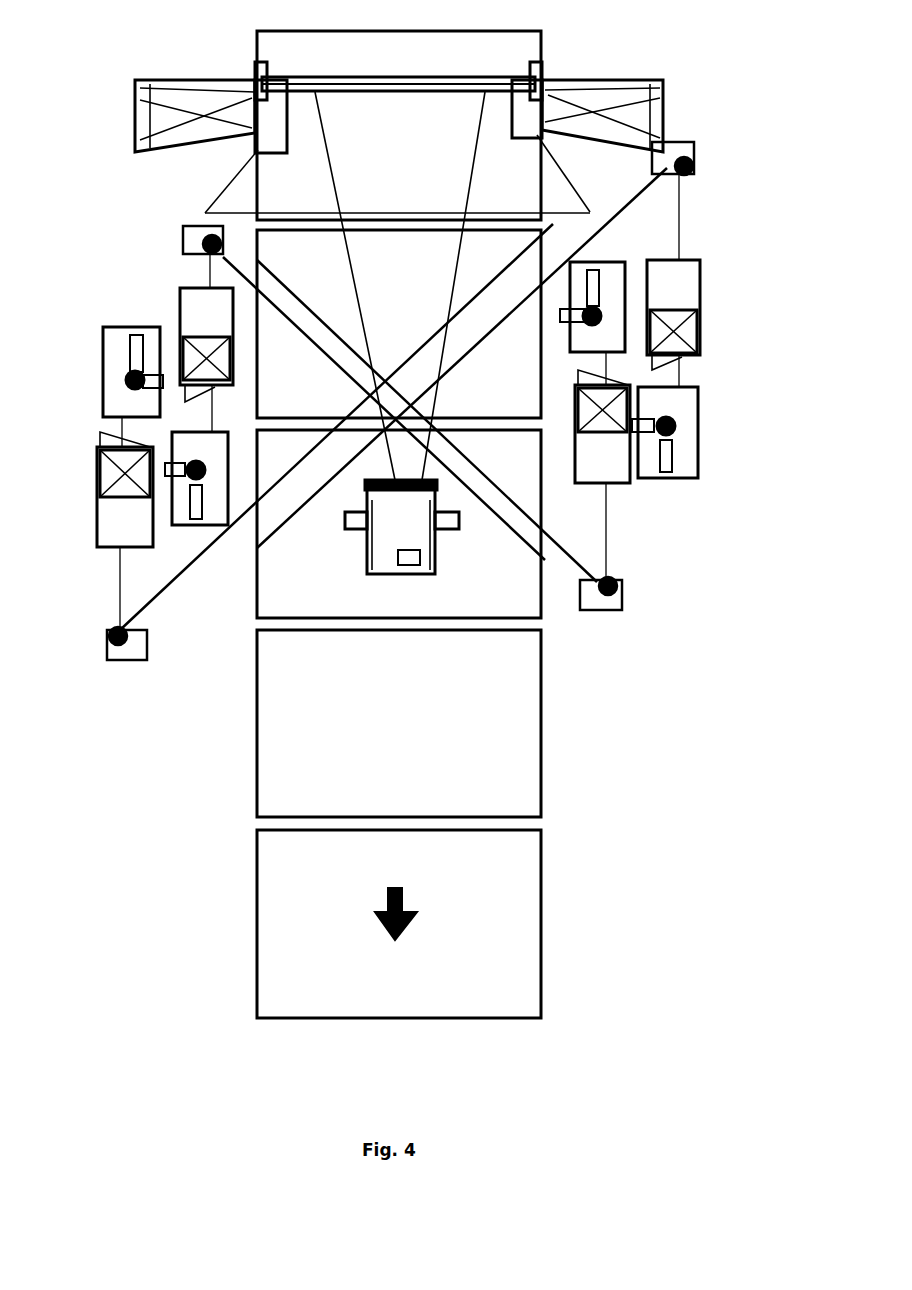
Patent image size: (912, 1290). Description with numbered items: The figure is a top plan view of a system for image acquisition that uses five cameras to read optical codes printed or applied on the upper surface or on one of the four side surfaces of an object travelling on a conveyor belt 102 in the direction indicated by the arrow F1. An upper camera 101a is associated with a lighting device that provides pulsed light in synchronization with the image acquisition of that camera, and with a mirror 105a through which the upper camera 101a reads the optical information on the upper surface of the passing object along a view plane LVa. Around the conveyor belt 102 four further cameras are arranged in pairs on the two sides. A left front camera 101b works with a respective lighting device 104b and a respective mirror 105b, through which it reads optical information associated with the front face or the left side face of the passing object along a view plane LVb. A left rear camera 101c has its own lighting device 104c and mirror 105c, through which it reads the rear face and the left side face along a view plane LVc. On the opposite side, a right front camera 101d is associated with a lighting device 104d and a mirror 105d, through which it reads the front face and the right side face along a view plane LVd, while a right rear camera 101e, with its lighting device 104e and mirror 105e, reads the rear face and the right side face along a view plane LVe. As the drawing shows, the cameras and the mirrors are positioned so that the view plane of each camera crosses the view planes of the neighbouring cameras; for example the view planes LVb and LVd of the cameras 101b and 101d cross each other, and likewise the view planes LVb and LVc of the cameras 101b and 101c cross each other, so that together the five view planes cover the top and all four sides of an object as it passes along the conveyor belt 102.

The upper camera 101a is at (370, 578).
The left front camera 101b is at (610, 268).
The left rear camera 101c is at (683, 480).
The right front camera 101d is at (103, 356).
The right rear camera 101e is at (196, 527).
The lighting device 104b is at (593, 486).
The lighting device 104c is at (684, 299).
The lighting device 104d is at (103, 509).
The lighting device 104e is at (180, 306).
The mirror 105a is at (290, 74).
The mirror 105b is at (592, 612).
The mirror 105c is at (693, 164).
The mirror 105d is at (112, 658).
The mirror 105e is at (182, 242).
The conveyor belt 102 is at (385, 1002).
The view plane LVa is at (391, 212).
The view plane LVb is at (505, 466).
The view plane LVc is at (300, 512).
The view plane LVd is at (296, 473).
The view plane LVe is at (318, 348).
The arrow F1 is at (382, 895).